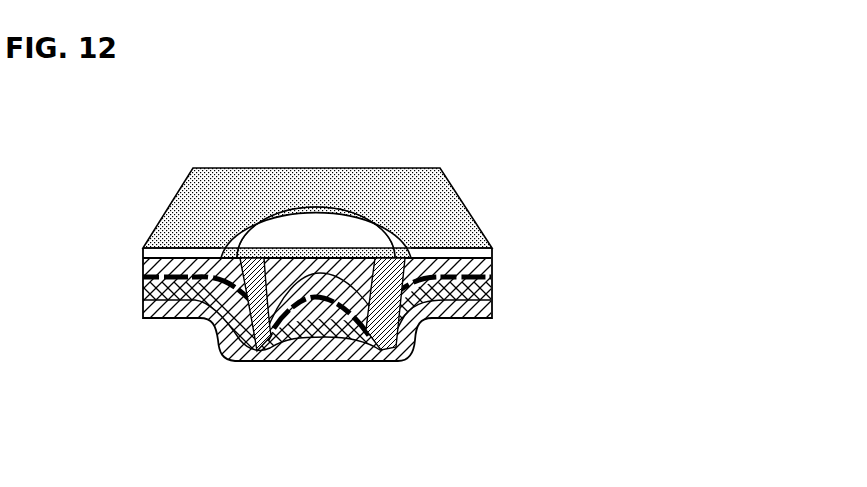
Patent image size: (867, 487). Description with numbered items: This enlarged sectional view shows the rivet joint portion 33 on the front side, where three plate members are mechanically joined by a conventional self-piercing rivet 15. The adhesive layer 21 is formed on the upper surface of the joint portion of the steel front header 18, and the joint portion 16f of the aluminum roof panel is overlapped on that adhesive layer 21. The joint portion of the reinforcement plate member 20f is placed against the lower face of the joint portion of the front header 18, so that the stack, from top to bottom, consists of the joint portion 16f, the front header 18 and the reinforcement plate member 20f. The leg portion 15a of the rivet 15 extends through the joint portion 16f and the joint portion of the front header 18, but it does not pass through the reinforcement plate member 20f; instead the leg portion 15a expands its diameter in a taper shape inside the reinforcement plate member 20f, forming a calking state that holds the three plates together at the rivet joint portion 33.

The self-piercing rivet 15 is at (400, 209).
The leg portion 15a is at (385, 344).
The rivet joint portion 33 is at (314, 214).
The joint portion of the roof panel 16f is at (493, 262).
The adhesive layer 21 is at (143, 277).
The front header 18 is at (493, 293).
The reinforcement plate member 20f is at (477, 308).